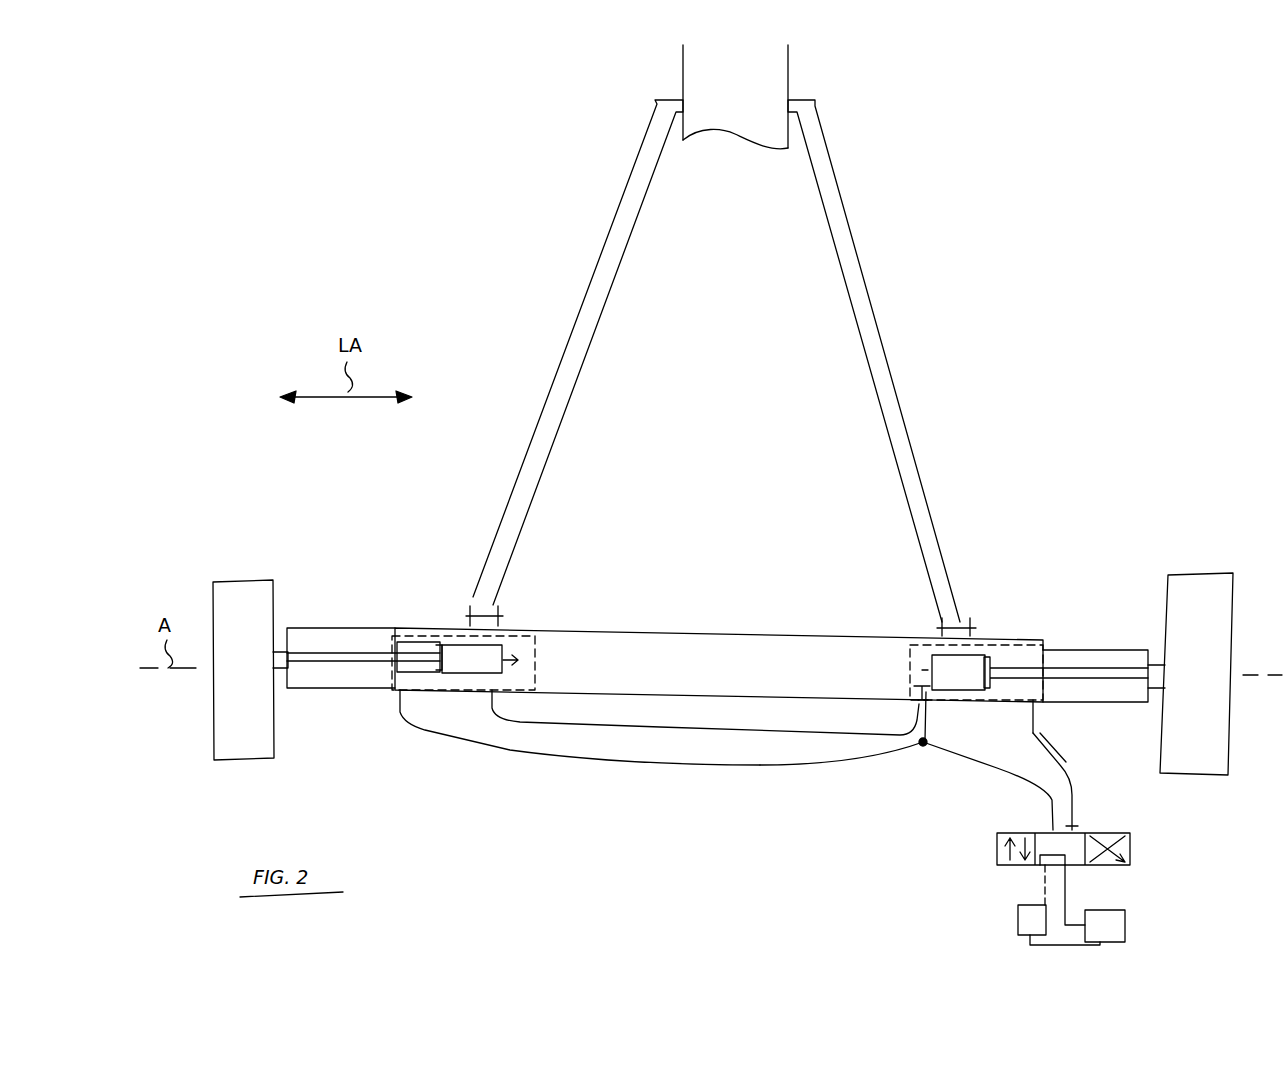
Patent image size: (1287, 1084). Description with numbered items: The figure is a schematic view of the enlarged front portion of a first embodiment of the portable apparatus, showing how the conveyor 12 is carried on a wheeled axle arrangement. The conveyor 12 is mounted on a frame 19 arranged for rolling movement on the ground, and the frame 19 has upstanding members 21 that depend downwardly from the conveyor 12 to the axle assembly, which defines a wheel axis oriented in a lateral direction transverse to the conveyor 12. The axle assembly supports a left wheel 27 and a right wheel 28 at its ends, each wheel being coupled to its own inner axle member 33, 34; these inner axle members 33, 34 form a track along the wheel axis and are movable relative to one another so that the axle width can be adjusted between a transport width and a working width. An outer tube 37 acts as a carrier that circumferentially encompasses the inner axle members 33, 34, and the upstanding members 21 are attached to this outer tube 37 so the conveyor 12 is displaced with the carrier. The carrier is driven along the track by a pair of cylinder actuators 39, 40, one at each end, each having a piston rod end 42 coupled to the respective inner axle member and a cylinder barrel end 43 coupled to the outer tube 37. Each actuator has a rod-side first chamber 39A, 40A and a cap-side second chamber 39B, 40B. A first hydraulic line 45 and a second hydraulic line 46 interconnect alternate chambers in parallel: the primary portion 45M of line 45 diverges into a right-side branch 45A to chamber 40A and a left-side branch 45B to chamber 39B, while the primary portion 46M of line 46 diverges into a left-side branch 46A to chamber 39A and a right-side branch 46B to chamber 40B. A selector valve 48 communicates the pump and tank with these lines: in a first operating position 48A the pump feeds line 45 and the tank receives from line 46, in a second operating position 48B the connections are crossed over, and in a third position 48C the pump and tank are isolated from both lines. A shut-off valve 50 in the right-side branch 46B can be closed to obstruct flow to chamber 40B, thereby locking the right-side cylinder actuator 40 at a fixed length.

The conveyor 12 is at (790, 52).
The frame 19 is at (972, 356).
The upstanding members 21 is at (913, 440).
The wheel 27 is at (243, 580).
The wheel 28 is at (1208, 573).
The inner axle member 33 is at (348, 628).
The inner axle member 34 is at (1108, 648).
The outer tube 37 is at (613, 630).
The cylinder actuator 39 is at (462, 631).
The first chamber 39A is at (418, 650).
The second chamber 39B is at (478, 640).
The cylinder actuator 40 is at (984, 650).
The first chamber 40A is at (1015, 665).
The second chamber 40B is at (948, 665).
The first actuator end 42 is at (292, 650).
The second actuator end 43 is at (490, 650).
The first hydraulic line 45 is at (1088, 778).
The right-side branch 45A is at (1040, 718).
The left-side branch 45B is at (515, 712).
The first primary portion of hydraulic line 45M is at (1080, 797).
The second hydraulic line 46 is at (995, 773).
The left-side branch 46A is at (412, 722).
The right-side branch 46B is at (912, 710).
The first primary portion of hydraulic line 46M is at (1035, 770).
The selector valve 48 is at (1079, 889).
The first operating position 48A is at (1007, 870).
The second operating position 48B is at (1100, 862).
The third position 48C is at (1043, 870).
The shut-off valve 50 is at (920, 688).